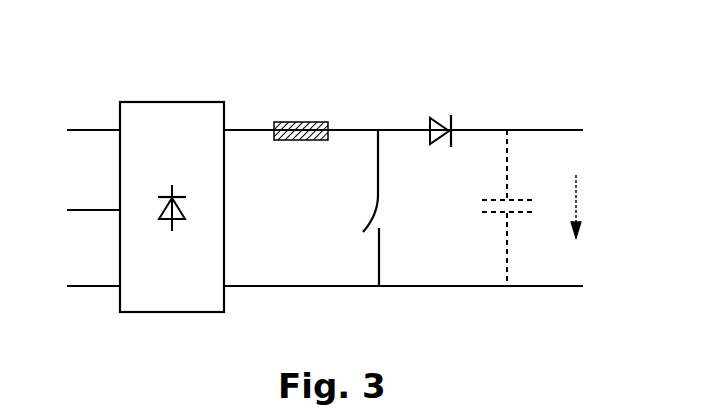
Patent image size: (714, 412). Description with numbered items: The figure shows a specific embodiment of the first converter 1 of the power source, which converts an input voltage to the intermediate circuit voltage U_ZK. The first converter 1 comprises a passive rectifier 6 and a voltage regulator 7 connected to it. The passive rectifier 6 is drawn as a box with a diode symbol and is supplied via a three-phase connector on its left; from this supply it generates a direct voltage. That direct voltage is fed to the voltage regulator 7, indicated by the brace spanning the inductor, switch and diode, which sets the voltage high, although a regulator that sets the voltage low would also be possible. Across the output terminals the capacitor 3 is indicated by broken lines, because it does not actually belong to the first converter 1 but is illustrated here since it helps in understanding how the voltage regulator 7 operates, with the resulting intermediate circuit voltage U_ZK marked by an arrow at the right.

The first converter 1 is at (346, 165).
The capacitor 3 is at (482, 218).
The passive rectifier 6 is at (155, 115).
The voltage regulator 7 is at (517, 100).